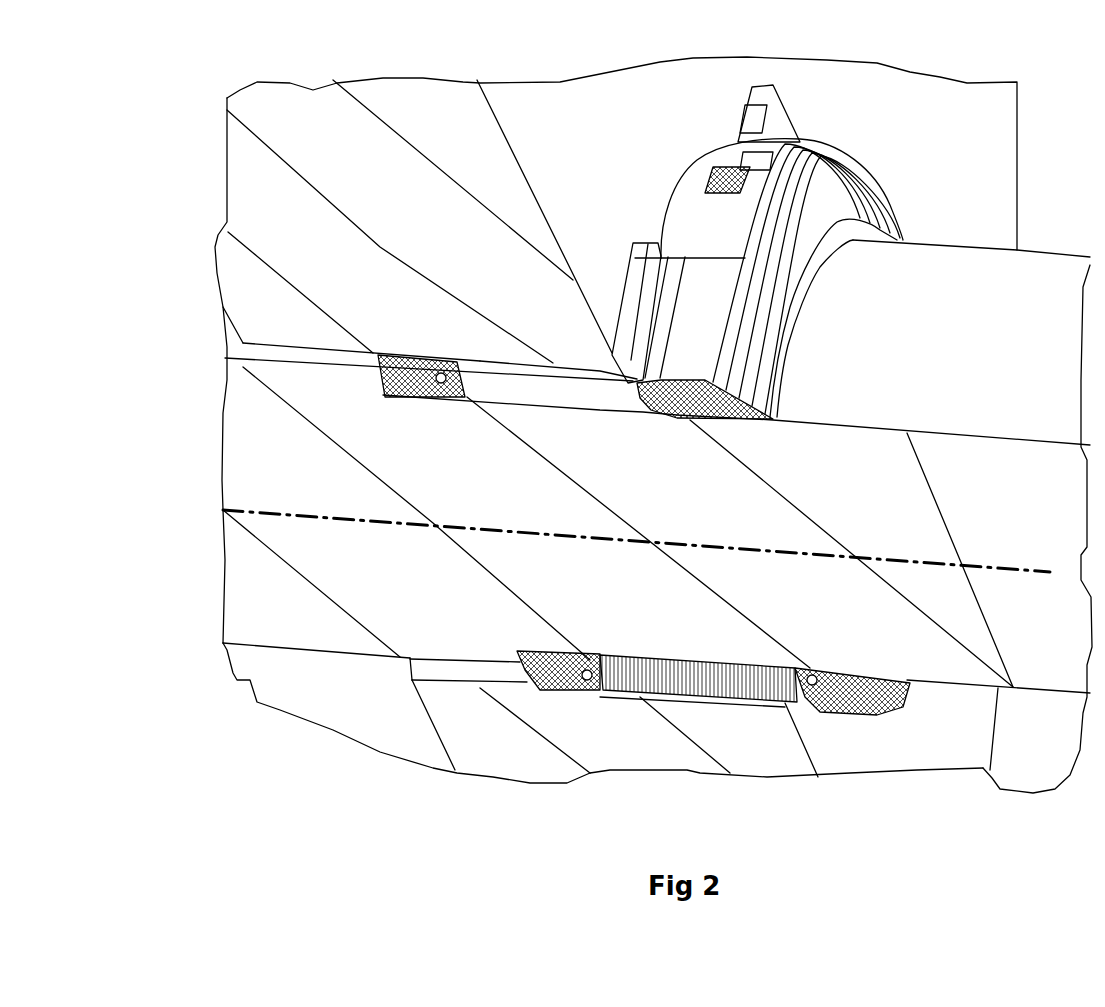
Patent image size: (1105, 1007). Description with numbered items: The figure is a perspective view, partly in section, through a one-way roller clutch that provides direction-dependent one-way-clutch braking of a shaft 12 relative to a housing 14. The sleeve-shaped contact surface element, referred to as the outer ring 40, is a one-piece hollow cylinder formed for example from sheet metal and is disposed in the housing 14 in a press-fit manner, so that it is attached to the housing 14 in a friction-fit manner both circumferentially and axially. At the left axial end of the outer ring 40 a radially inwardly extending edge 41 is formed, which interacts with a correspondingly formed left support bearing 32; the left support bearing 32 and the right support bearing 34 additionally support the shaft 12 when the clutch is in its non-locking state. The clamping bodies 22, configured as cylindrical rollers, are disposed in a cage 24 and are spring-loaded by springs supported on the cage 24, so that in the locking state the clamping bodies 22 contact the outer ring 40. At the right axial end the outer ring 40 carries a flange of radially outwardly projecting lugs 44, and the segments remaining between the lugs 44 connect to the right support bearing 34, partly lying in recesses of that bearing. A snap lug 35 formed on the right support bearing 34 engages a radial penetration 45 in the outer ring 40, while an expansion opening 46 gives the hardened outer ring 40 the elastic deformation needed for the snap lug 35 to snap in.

The shaft 12 is at (295, 538).
The housing 14 is at (282, 232).
The clamping bodies 22 is at (488, 405).
The cage 24 is at (600, 690).
The left support bearing 32 is at (550, 668).
The right support bearing 34 is at (848, 705).
The snap lug 35 is at (740, 172).
The outer ring 40 is at (553, 362).
The radially inwardly extending edge 41 is at (310, 357).
The lugs 44 is at (800, 142).
The radial penetration 45 is at (770, 150).
The expansion opening 46 is at (790, 145).